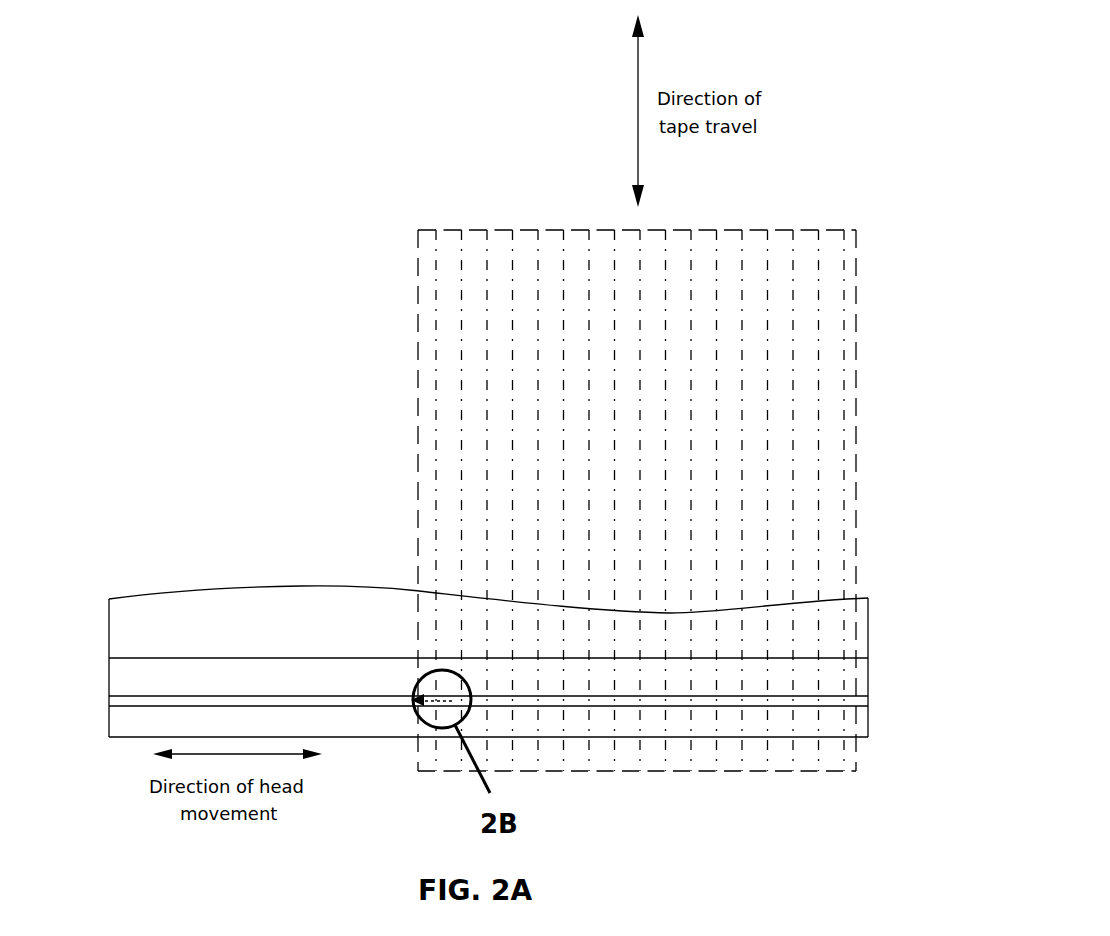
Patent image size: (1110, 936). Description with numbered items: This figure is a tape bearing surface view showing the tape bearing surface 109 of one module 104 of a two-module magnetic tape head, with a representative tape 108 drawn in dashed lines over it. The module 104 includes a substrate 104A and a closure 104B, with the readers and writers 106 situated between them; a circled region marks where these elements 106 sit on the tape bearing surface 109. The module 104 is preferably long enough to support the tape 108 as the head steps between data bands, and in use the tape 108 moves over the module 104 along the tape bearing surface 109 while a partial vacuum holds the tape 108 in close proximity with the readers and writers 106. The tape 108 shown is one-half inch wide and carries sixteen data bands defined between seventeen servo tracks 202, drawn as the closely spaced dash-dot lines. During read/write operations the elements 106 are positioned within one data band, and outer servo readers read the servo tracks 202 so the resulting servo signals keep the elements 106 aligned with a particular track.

The module 104 is at (459, 620).
The substrate 104A is at (253, 586).
The closure 104B is at (108, 722).
The readers and writers 106 is at (415, 694).
The tape 108 is at (418, 315).
The tape bearing surface 109 is at (315, 682).
The servo tracks 202 is at (535, 435).